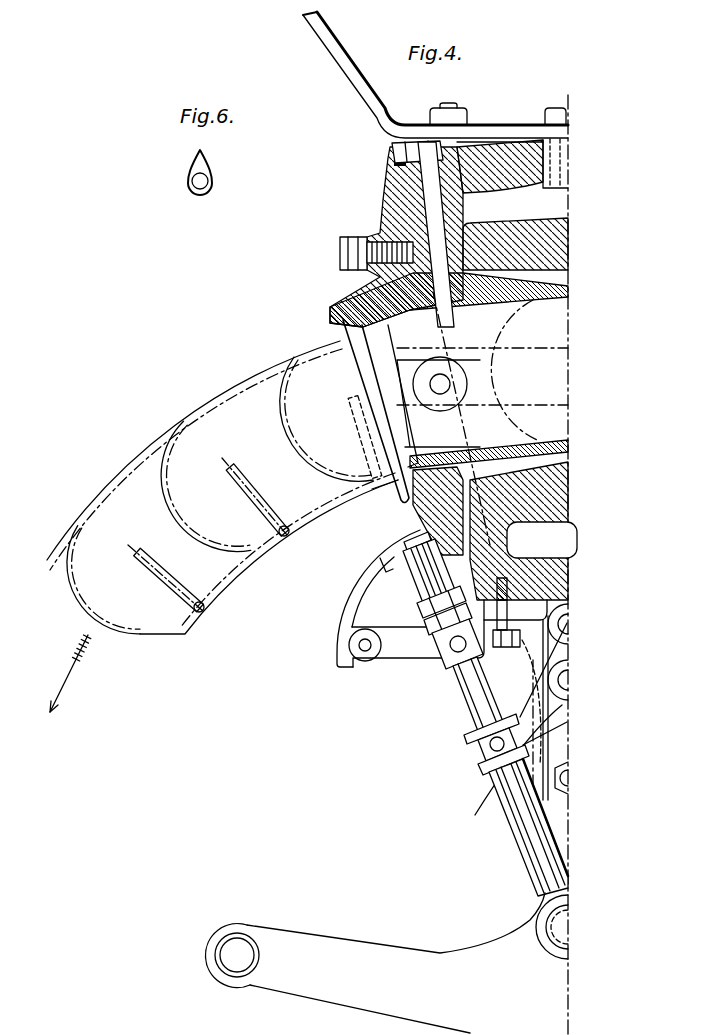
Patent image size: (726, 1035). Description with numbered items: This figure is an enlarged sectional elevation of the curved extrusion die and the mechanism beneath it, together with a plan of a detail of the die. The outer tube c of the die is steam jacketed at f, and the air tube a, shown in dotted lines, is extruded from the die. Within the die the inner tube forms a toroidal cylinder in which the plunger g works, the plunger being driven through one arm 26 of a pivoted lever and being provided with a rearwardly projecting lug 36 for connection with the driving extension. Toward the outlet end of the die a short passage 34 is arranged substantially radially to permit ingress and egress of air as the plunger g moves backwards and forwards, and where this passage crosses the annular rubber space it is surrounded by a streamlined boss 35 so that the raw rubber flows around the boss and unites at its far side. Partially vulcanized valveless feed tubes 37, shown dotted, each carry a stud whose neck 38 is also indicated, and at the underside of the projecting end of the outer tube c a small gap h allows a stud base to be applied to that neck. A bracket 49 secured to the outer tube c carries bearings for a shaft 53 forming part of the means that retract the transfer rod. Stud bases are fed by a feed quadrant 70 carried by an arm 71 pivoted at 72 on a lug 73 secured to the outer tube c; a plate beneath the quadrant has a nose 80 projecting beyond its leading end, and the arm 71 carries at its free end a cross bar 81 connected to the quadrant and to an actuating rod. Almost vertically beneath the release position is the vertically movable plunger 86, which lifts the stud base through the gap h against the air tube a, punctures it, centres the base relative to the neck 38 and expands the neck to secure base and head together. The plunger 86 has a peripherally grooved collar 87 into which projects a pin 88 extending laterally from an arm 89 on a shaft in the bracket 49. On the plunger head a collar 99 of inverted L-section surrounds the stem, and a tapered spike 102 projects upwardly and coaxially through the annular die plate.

In FIG. 6, the rearwardly projecting lug 36 is at (207, 162).
In FIG. 4, the short passage 34 is at (388, 176).
In FIG. 4, the streamlined boss 35 is at (438, 238).
In FIG. 4, the outer tube c is at (508, 240).
In FIG. 4, the steam jacket f is at (555, 562).
In FIG. 4, the plunger g is at (283, 378).
In FIG. 4, the air tube a is at (125, 478).
In FIG. 4, the feed tubes 37 is at (352, 404).
In FIG. 4, the neck of the stud 38 is at (353, 510).
In FIG. 4, the gap h is at (380, 423).
In FIG. 4, the nose 80 is at (442, 541).
In FIG. 4, the tapered spike 102 is at (404, 541).
In FIG. 4, the feed quadrant 70 is at (352, 593).
In FIG. 4, the collar 99 is at (410, 572).
In FIG. 4, the cross bar 81 is at (360, 661).
In FIG. 4, the arm 71 is at (400, 656).
In FIG. 4, the pivot 72 is at (438, 660).
In FIG. 4, the lug 73 is at (452, 668).
In FIG. 4, the shaft 53 is at (563, 626).
In FIG. 4, the arm 89 is at (530, 717).
In FIG. 4, the plunger 86 is at (482, 703).
In FIG. 4, the peripherally grooved collar 87 is at (478, 750).
In FIG. 4, the pin 88 is at (481, 775).
In FIG. 4, the bracket 49 is at (515, 798).
In FIG. 4, the arm of lever 26 is at (403, 957).